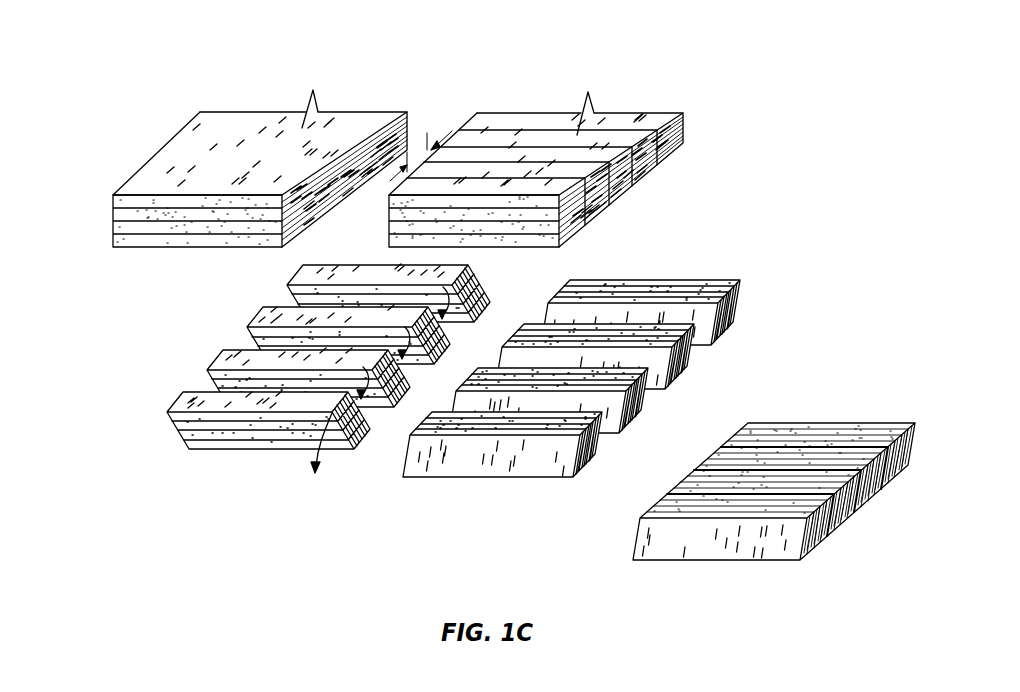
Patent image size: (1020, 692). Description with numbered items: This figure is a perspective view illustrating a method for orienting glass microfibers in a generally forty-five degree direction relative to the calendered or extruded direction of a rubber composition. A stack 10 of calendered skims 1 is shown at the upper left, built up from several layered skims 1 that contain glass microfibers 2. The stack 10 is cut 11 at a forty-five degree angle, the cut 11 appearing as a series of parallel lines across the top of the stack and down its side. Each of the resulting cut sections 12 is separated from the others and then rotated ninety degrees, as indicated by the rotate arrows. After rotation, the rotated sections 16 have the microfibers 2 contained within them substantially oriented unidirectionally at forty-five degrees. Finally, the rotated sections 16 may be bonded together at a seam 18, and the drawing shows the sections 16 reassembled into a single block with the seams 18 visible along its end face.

The stack 10 is at (169, 64).
The calendered skim 1 is at (113, 197).
The microfibers 2 is at (202, 132).
The rotated section 16 is at (583, 467).
The cut section 12 is at (302, 280).
The cut 11 is at (639, 177).
The seam 18 is at (902, 478).